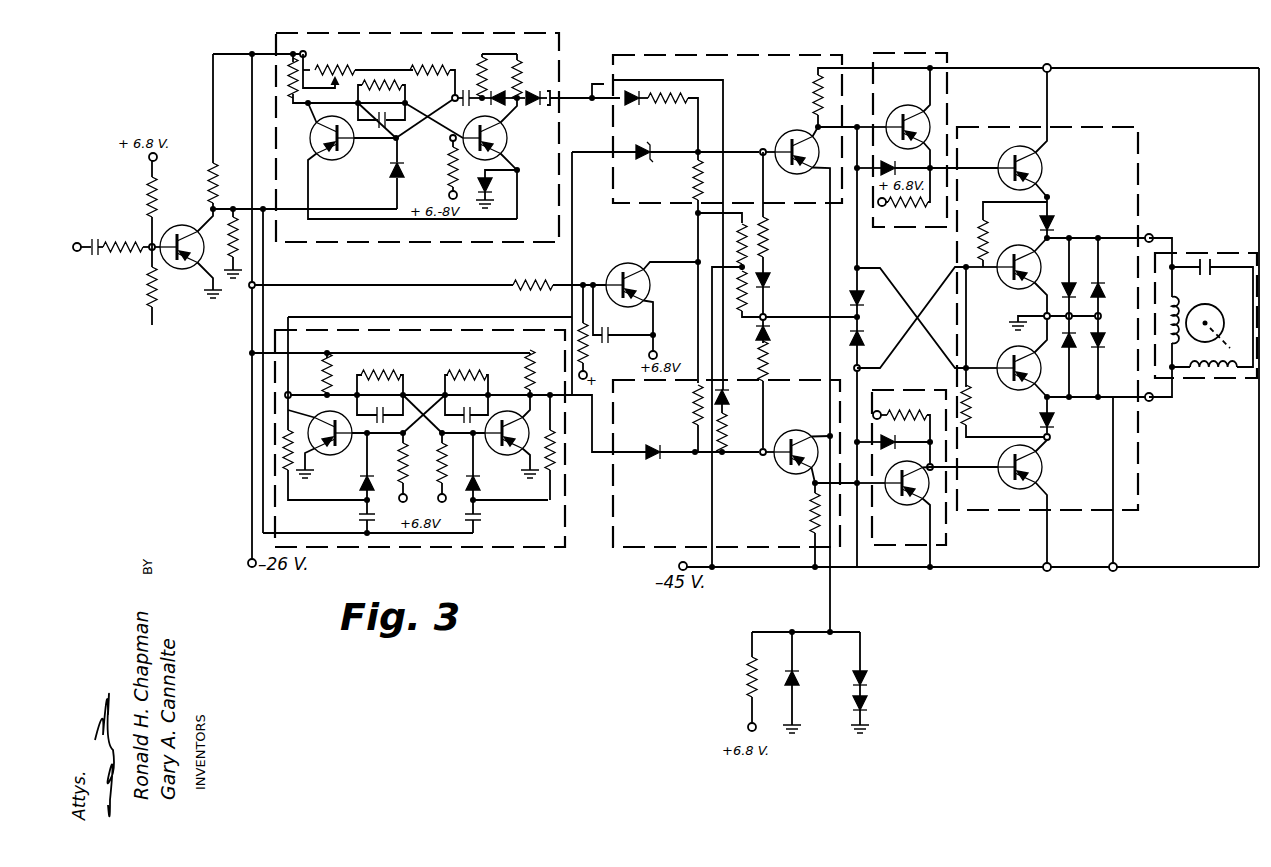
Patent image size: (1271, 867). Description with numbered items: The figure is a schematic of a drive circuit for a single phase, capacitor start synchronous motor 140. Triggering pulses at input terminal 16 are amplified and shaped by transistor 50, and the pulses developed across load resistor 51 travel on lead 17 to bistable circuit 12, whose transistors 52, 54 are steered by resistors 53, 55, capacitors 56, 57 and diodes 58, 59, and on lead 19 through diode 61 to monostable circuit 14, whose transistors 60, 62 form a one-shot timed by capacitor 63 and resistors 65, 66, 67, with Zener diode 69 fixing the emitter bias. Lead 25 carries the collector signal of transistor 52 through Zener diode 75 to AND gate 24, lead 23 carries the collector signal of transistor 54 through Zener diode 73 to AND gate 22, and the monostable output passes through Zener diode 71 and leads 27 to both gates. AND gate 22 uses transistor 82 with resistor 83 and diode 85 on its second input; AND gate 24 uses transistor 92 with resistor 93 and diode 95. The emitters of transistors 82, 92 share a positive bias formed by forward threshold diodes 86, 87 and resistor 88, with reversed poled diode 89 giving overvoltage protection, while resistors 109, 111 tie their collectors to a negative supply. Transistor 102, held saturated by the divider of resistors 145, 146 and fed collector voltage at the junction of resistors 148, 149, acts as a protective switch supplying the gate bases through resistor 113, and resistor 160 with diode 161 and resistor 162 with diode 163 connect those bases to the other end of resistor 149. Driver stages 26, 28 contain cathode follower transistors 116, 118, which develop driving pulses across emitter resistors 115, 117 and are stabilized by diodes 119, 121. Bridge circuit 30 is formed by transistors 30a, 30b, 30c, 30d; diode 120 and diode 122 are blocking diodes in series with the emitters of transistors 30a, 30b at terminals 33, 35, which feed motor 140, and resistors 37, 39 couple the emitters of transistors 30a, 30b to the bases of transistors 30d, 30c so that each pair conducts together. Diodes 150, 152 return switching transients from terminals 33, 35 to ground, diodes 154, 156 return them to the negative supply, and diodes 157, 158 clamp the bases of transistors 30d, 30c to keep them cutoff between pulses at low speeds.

The bistable circuit 12 is at (510, 549).
The monostable circuit 14 is at (334, 231).
The input terminal 16 is at (78, 243).
The lead 17 is at (427, 295).
The lead 19 is at (308, 208).
The AND gate 22 is at (659, 547).
The lead 23 is at (593, 418).
The AND gate 24 is at (666, 57).
The lead 25 is at (416, 316).
The driver stage 26 is at (932, 540).
The leads 27 is at (596, 90).
The driver stage 28 is at (893, 54).
The bridge circuit 30 is at (1102, 124).
The transistor 30a is at (1005, 160).
The transistor 30b is at (1008, 484).
The transistor 30c is at (1014, 288).
The transistor 30d is at (1012, 346).
The terminal 33 is at (1152, 233).
The terminal 35 is at (1152, 403).
The resistor 37 is at (976, 220).
The resistor 39 is at (969, 422).
The transistor 50 is at (191, 225).
The load resistor 51 is at (232, 228).
The transistor 52 is at (361, 458).
The resistor 53 is at (280, 447).
The transistor 54 is at (519, 458).
The resistor 55 is at (552, 384).
The capacitor 56 is at (361, 514).
The capacitor 57 is at (478, 522).
The diode 58 is at (362, 483).
The diode 59 is at (479, 486).
The transistor 60 is at (304, 148).
The diode 61 is at (388, 170).
The transistor 62 is at (513, 146).
The capacitor 63 is at (454, 96).
The resistor 65 is at (341, 50).
The variable resistor 66 is at (431, 54).
The resistor 67 is at (480, 62).
The Zener diode 69 is at (493, 184).
The Zener diode 71 is at (519, 94).
The Zener diode 73 is at (650, 444).
The Zener diode 75 is at (642, 155).
The transistor 82 is at (806, 427).
The resistor 83 is at (725, 432).
The diode 85 is at (725, 398).
The forward threshold diode 86 is at (866, 680).
The forward threshold diode 87 is at (868, 704).
The resistor 88 is at (746, 686).
The reversed poled diode 89 is at (798, 682).
The transistor 92 is at (791, 127).
The resistor 93 is at (663, 102).
The diode 95 is at (629, 104).
The transistor 102 is at (634, 260).
The resistor 109 is at (808, 515).
The resistor 111 is at (816, 94).
The resistor 113 is at (693, 406).
The emitter resistor 115 is at (694, 184).
The transistor 116 is at (916, 504).
The emitter resistor 117 is at (897, 208).
The transistor 118 is at (920, 100).
The diode 119 is at (890, 444).
The diode 120 is at (1040, 223).
The diode 121 is at (902, 162).
The diode 122 is at (1040, 420).
The synchronous motor 140 is at (1240, 243).
The resistor 145 is at (521, 281).
The resistor 146 is at (592, 336).
The resistor 148 is at (738, 246).
The resistor 149 is at (742, 312).
The diode 150 is at (1065, 282).
The diode 152 is at (1068, 350).
The diode 154 is at (1101, 286).
The diode 156 is at (1101, 340).
The diode 157 is at (886, 252).
The diode 158 is at (860, 338).
The resistor 160 is at (770, 362).
The diode 161 is at (771, 333).
The resistor 162 is at (768, 252).
The diode 163 is at (772, 278).